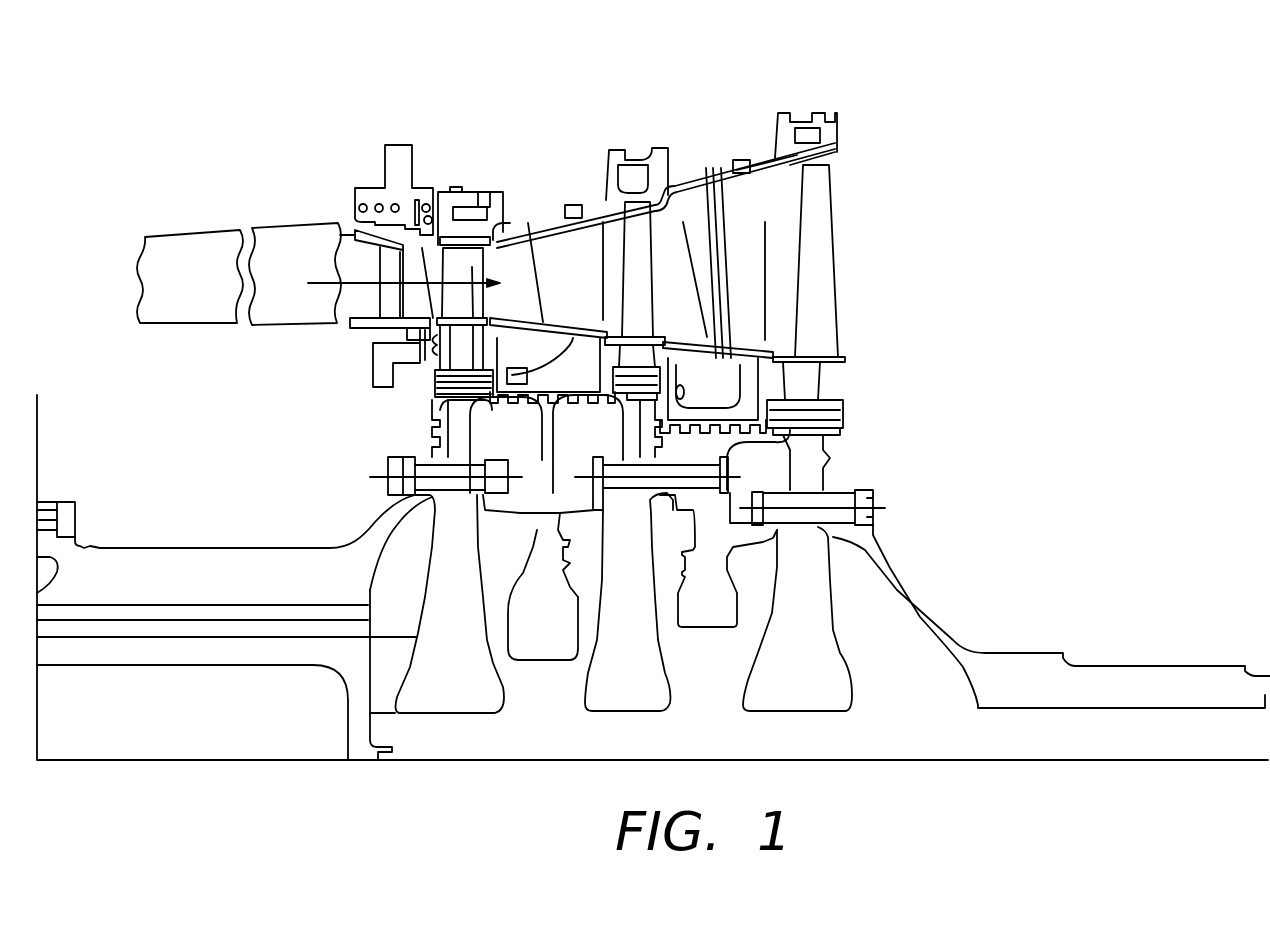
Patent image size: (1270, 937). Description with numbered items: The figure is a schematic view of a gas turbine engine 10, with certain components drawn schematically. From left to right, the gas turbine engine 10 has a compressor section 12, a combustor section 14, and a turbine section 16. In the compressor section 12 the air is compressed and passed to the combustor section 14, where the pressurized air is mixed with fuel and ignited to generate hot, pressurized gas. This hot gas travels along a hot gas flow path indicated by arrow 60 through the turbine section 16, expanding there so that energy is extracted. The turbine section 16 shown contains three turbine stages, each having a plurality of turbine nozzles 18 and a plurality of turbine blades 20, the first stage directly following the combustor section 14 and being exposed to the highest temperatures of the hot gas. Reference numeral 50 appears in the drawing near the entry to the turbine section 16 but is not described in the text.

The gas turbine engine 10 is at (542, 64).
The compressor section 12 is at (192, 234).
The combustor section 14 is at (291, 228).
The turbine section 16 is at (355, 100).
The turbine nozzles 18 is at (377, 322).
The turbine blades 20 is at (468, 270).
The hot gas path 50 is at (375, 300).
The hot gas flow path 60 is at (418, 297).